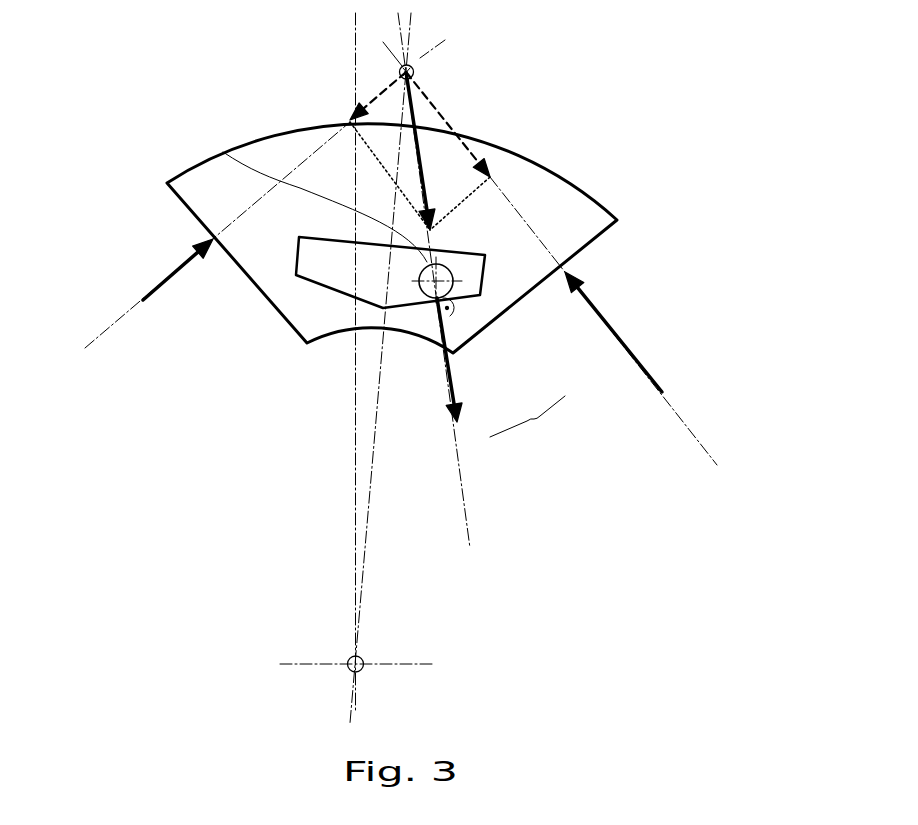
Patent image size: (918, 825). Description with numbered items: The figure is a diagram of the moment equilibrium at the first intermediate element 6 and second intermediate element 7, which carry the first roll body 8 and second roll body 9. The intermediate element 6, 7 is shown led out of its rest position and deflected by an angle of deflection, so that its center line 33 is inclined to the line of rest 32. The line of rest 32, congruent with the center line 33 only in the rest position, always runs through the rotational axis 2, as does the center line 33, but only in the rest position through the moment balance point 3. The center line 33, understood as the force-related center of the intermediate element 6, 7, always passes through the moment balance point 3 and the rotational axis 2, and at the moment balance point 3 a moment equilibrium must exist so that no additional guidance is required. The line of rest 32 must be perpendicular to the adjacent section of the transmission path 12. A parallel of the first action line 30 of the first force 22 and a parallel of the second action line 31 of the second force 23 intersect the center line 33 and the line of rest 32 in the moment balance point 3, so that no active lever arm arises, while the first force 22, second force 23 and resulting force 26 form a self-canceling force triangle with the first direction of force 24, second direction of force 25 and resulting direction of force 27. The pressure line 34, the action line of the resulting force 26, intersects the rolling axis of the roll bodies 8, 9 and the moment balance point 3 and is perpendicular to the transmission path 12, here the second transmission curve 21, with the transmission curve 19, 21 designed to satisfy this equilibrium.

The rotational axis 2 is at (348, 668).
The moment balance point 3 is at (414, 72).
The first intermediate element 6 is at (356, 237).
The second intermediate element 7 is at (200, 188).
The first roll body 8 is at (306, 174).
The second roll body 9 is at (223, 152).
The transmission path 12 is at (430, 347).
The transmission curve 19 is at (319, 297).
The second transmission curve 21 is at (470, 311).
The first force 22 is at (612, 323).
The second force 23 is at (170, 268).
The first direction of force 24 is at (490, 152).
The second direction of force 25 is at (358, 84).
The resulting force 26 is at (423, 163).
The resulting direction of force 27 is at (443, 407).
The first action line 30 is at (703, 443).
The second action line 31 is at (107, 328).
The line of rest 32 is at (355, 405).
The center line 33 is at (367, 552).
The pressure line 34 is at (468, 493).